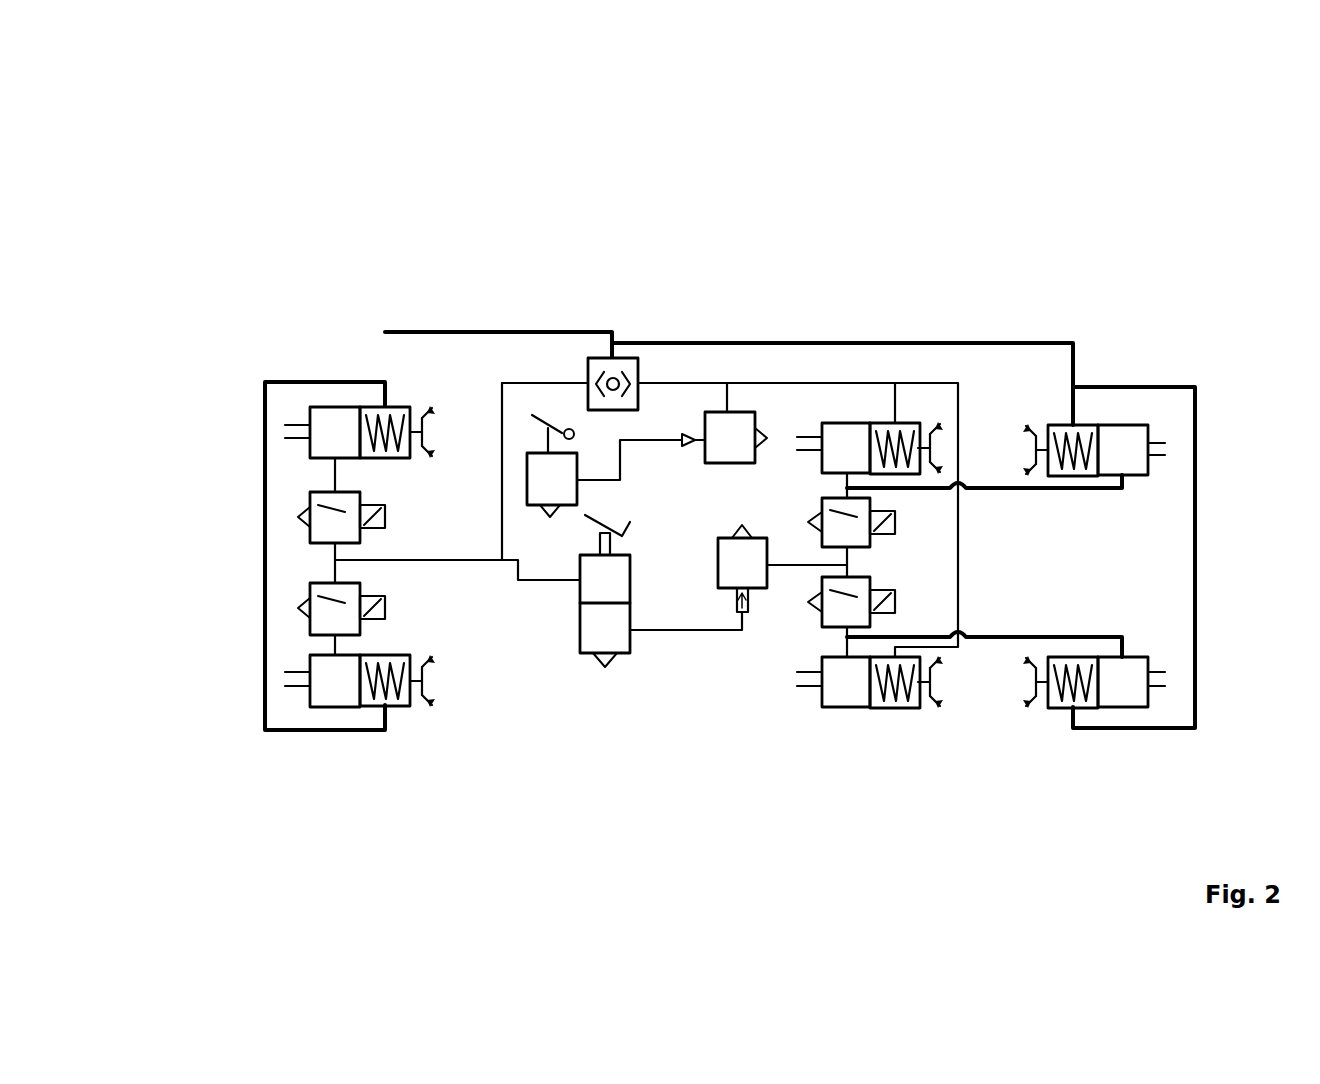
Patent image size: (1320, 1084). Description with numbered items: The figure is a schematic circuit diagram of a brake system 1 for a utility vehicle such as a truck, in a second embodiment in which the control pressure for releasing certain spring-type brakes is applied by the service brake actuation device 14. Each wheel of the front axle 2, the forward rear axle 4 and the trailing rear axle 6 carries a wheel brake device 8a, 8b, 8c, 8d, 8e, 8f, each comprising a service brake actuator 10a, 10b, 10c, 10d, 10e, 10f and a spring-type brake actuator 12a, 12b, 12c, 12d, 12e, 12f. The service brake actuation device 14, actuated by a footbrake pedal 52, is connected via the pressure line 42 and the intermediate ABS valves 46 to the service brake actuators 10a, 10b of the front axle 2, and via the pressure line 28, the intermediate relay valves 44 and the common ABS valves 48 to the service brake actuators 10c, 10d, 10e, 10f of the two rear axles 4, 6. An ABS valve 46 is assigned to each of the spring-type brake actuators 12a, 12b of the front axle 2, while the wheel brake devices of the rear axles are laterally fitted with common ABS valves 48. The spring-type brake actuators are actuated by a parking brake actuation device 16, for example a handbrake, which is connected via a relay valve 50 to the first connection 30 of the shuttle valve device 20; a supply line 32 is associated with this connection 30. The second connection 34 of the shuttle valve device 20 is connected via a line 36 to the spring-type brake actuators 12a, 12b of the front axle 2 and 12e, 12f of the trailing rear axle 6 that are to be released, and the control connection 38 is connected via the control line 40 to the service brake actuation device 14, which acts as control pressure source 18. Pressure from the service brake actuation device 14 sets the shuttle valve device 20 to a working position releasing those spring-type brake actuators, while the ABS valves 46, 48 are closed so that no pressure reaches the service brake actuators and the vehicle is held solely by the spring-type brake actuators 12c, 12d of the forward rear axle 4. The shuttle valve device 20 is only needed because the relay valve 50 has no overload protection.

The brake system 1 is at (183, 190).
The front axle 2 is at (348, 770).
The forward rear axle 4 is at (895, 770).
The trailing rear axle 6 is at (1107, 770).
The wheel brake device 8a is at (305, 412).
The wheel brake device 8b is at (305, 662).
The wheel brake device 8c is at (872, 415).
The wheel brake device 8d is at (868, 712).
The wheel brake device 8e is at (1152, 433).
The wheel brake device 8f is at (1152, 665).
The service brake actuator 10a is at (328, 425).
The service brake actuator 10b is at (322, 693).
The service brake actuator 10c is at (847, 430).
The service brake actuator 10d is at (830, 707).
The service brake actuator 10e is at (1133, 430).
The service brake actuator 10f is at (1125, 707).
The spring-type brake actuator 12a is at (392, 425).
The spring-type brake actuator 12b is at (400, 705).
The spring-type brake actuator 12c is at (912, 430).
The spring-type brake actuator 12d is at (910, 707).
The spring-type brake actuator 12e is at (1072, 430).
The spring-type brake actuator 12f is at (1055, 707).
The service brake actuation device 14 is at (600, 633).
The parking brake actuation device 16 is at (541, 520).
The control pressure source 18 is at (600, 585).
The shuttle valve device 20 is at (590, 358).
The pressure line 28 is at (680, 630).
The first connection 30 is at (638, 380).
The supply line 32 is at (760, 383).
The second connection 34 is at (612, 357).
The line 36 is at (450, 332).
The control connection 38 is at (588, 378).
The control line 40 is at (502, 495).
The pressure line 42 is at (462, 560).
The relay valve 44 is at (755, 572).
The ABS valve 46 is at (335, 512).
The ABS valve 48 is at (858, 527).
The relay valve 50 is at (729, 440).
The footbrake pedal 52 is at (610, 517).